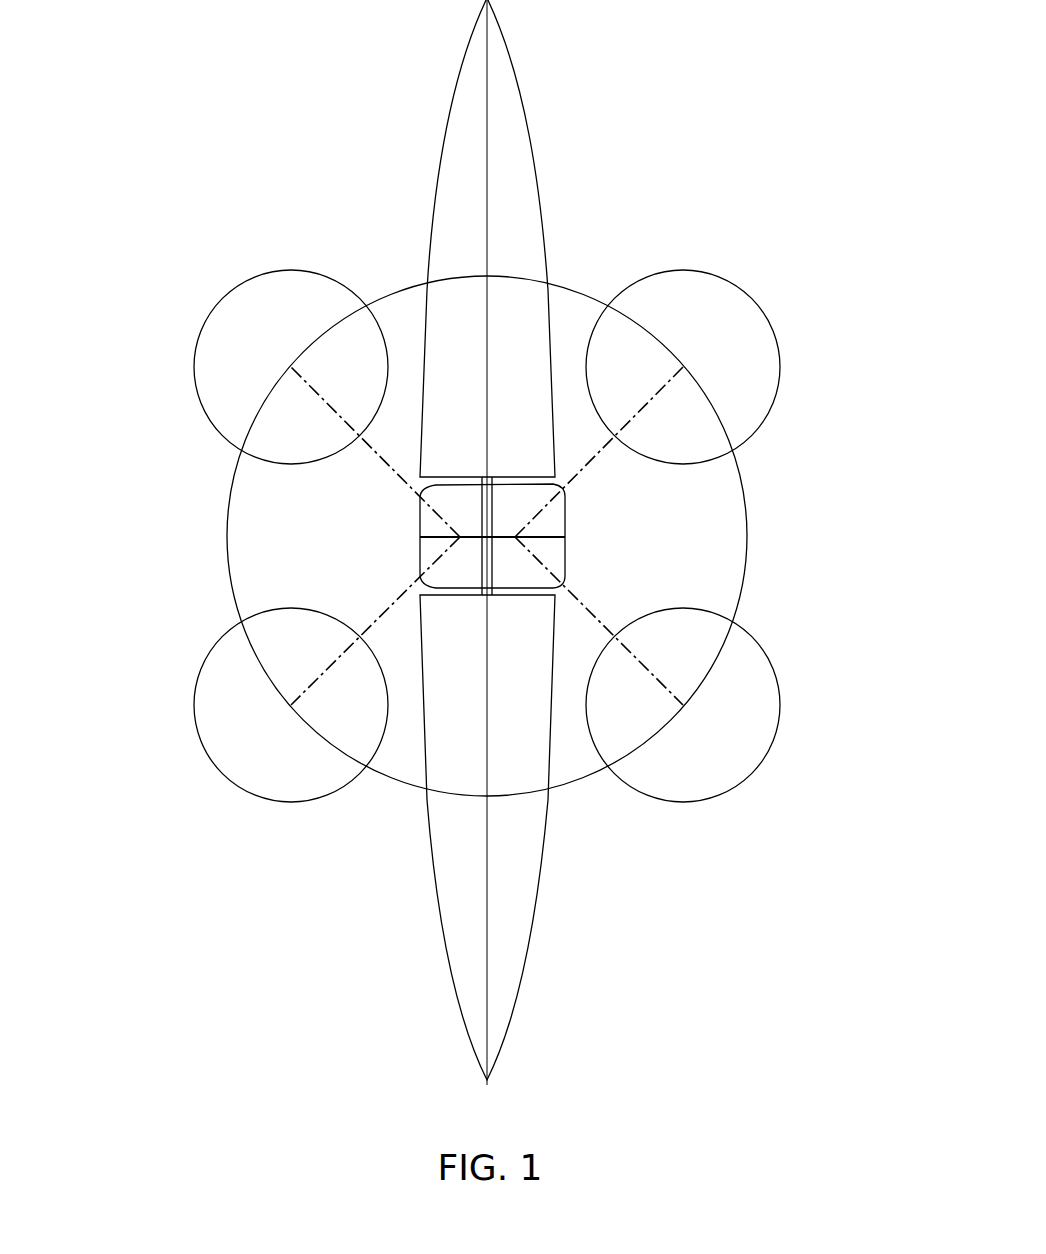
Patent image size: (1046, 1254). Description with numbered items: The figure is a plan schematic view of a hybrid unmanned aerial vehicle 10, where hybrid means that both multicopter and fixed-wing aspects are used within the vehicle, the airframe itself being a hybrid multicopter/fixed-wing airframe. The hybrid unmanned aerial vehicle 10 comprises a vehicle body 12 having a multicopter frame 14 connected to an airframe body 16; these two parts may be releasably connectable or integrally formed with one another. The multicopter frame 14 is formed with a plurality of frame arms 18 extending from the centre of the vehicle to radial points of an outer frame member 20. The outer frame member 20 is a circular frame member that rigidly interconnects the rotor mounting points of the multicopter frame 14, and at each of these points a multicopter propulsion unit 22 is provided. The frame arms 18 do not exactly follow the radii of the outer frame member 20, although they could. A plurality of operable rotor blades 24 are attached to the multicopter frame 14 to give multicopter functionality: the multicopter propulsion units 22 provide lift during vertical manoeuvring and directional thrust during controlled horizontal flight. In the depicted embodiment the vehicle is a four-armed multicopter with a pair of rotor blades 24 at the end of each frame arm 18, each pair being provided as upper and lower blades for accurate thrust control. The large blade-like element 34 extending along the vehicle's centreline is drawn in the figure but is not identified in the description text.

The hybrid unmanned aerial vehicle 10 is at (207, 122).
The vehicle body 12 is at (788, 507).
The multicopter frame 14 is at (217, 492).
The airframe body 16 is at (568, 558).
The frame arms 18 is at (397, 585).
The outer frame member 20 is at (568, 783).
The multicopter propulsion unit 22 is at (203, 315).
The rotor blades 24 is at (237, 378).
The propeller blades 34 is at (545, 165).